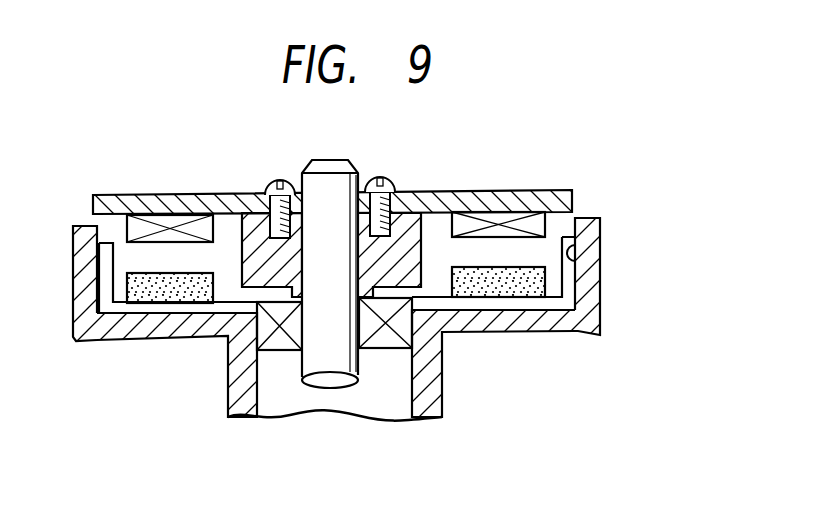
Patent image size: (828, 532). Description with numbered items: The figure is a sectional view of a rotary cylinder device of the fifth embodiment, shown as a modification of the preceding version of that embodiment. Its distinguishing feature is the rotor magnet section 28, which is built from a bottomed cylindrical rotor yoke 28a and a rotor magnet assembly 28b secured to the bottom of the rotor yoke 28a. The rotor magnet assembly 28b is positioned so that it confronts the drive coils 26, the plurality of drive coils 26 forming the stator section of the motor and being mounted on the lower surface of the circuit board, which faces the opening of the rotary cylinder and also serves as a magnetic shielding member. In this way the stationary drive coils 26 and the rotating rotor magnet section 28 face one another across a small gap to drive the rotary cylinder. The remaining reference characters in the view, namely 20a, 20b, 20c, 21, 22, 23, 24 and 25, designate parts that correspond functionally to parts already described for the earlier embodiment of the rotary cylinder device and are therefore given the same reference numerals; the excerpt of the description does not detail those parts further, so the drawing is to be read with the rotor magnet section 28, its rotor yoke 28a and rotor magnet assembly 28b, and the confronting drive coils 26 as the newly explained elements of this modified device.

The projection 20a is at (575, 256).
The step portion 20b is at (580, 295).
The engaging portion 20c is at (670, 217).
The housing 21 is at (80, 230).
The shaft 22 is at (317, 375).
The stator plate 23 is at (483, 200).
The screw 24 is at (287, 188).
The bearing holder 25 is at (405, 225).
The drive coils 26 is at (158, 217).
The rotor magnet section 28 is at (220, 415).
The rotor yoke 28a is at (117, 312).
The rotor magnet assembly 28b is at (185, 300).